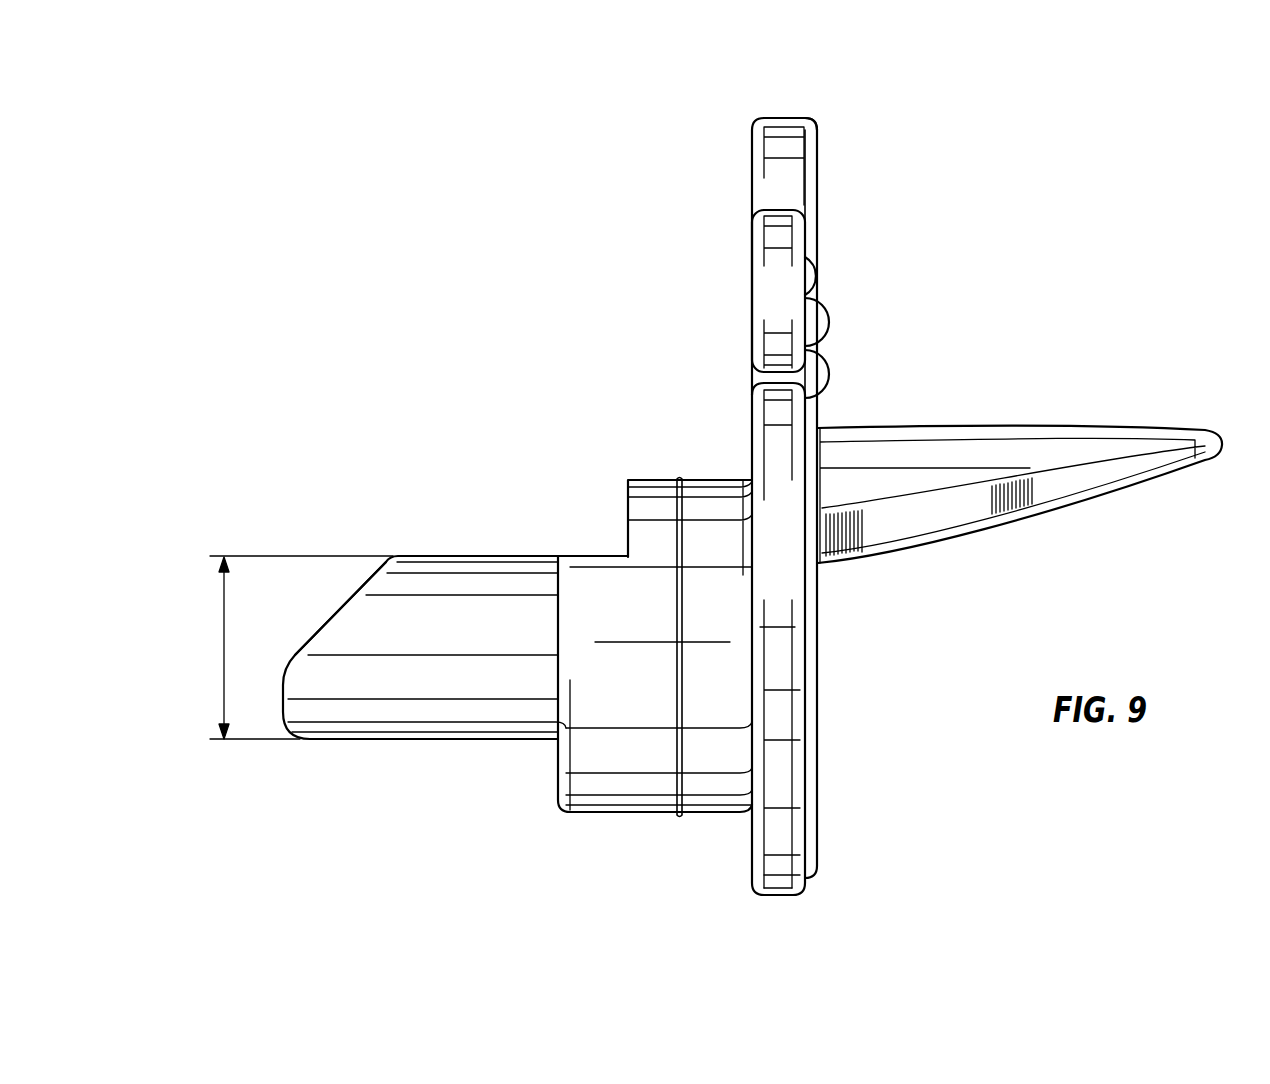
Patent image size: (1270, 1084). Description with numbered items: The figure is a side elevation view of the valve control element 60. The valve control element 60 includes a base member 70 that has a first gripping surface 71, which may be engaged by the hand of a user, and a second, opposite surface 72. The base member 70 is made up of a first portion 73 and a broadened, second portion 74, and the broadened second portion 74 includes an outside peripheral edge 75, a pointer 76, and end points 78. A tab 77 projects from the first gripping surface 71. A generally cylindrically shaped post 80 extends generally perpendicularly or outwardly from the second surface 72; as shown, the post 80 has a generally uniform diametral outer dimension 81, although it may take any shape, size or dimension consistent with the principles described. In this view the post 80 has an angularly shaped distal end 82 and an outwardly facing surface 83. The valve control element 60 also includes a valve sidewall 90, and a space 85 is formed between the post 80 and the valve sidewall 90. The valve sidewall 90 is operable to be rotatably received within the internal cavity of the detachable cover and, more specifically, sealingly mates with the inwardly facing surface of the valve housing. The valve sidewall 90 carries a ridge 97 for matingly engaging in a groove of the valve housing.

The valve control element 60 is at (933, 148).
The base member 70 is at (838, 737).
The first gripping surface 71 is at (820, 686).
The second, opposite surface 72 is at (748, 291).
The first portion 73 is at (808, 830).
The broadened, second portion 74 is at (808, 306).
The outside peripheral edge 75 is at (780, 878).
The pointer 76 is at (783, 118).
The tab 77 is at (1122, 498).
The end points 78 is at (780, 378).
The cylindrically shaped post 80 is at (480, 555).
The diametral outer dimension 81 is at (223, 648).
The angularly shaped distal end 82 is at (323, 630).
The outwardly facing surface 83 is at (413, 678).
The space 85 is at (538, 763).
The valve sidewall 90 is at (658, 478).
The ridge 97 is at (676, 782).